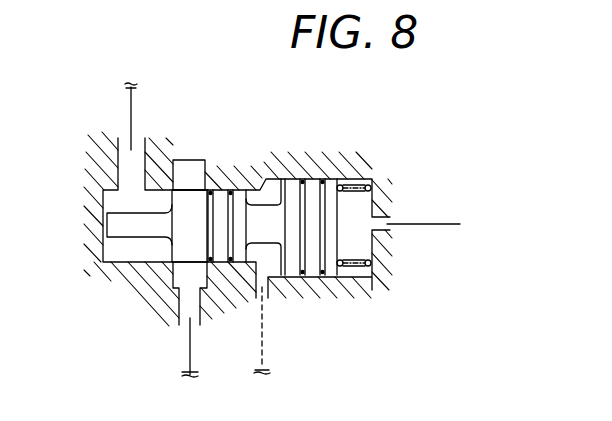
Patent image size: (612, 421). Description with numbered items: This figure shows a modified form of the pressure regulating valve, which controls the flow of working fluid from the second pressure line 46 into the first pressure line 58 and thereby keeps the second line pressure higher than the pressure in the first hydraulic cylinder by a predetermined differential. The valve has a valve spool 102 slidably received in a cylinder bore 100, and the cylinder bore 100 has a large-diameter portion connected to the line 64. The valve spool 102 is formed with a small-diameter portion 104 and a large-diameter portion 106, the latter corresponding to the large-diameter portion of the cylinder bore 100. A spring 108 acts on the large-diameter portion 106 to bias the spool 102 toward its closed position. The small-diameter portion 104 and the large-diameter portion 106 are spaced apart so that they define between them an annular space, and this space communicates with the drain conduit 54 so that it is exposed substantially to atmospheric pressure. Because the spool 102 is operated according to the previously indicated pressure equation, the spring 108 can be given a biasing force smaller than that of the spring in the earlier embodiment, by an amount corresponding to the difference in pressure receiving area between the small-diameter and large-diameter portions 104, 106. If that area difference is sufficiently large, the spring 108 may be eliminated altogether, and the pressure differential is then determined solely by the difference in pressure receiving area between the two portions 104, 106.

The second pressure line 46 is at (130, 108).
The small-diameter portion 104 is at (193, 193).
The cylinder bore 100 is at (150, 256).
The valve spool 102 is at (273, 213).
The large-diameter portion 106 is at (312, 185).
The spring 108 is at (367, 180).
The line 64 is at (433, 223).
The first pressure line 58 is at (188, 357).
The drain conduit 54 is at (263, 355).